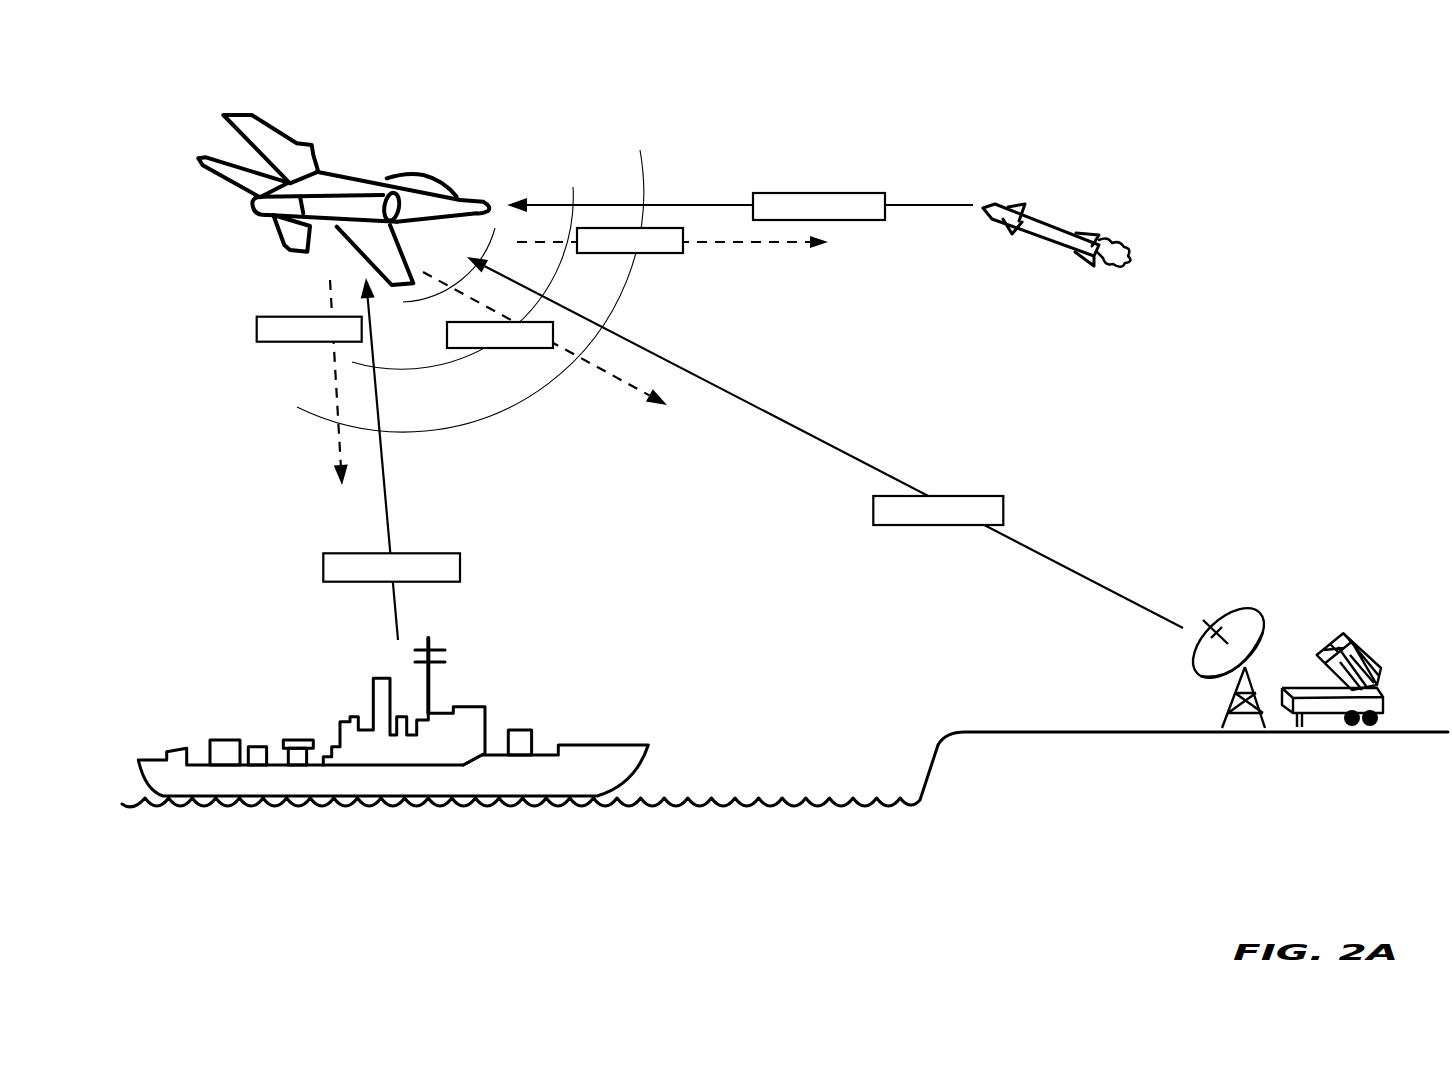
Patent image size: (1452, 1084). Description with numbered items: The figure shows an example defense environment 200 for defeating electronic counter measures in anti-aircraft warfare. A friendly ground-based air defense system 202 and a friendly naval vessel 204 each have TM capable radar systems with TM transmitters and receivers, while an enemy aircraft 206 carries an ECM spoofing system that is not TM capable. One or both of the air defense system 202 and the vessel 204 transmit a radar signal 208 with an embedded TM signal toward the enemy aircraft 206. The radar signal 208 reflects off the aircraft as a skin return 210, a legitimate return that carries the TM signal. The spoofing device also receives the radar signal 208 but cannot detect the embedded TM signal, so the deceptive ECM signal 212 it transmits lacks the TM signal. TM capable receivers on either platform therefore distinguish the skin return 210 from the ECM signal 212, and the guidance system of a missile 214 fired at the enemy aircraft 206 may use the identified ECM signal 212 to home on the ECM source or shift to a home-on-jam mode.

The defense environment 200 is at (1174, 111).
The ground-based air defense system 202 is at (1239, 556).
The naval vessel 204 is at (600, 745).
The enemy aircraft 206 is at (263, 123).
The radar signal 208 is at (792, 193).
The skin return 210 is at (461, 421).
The ECM signal 212 is at (675, 254).
The missile 214 is at (1057, 225).